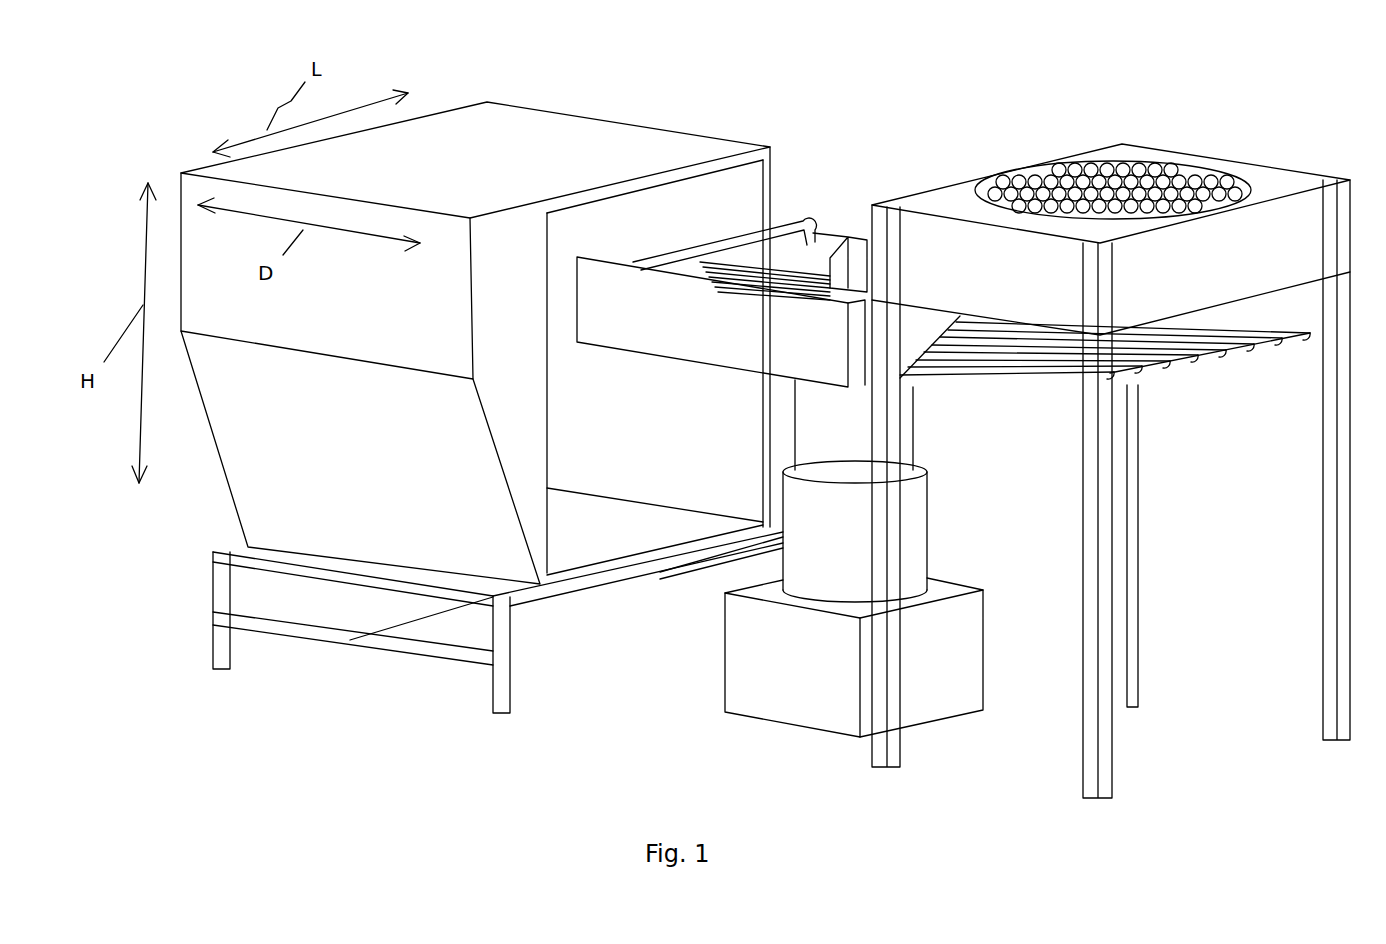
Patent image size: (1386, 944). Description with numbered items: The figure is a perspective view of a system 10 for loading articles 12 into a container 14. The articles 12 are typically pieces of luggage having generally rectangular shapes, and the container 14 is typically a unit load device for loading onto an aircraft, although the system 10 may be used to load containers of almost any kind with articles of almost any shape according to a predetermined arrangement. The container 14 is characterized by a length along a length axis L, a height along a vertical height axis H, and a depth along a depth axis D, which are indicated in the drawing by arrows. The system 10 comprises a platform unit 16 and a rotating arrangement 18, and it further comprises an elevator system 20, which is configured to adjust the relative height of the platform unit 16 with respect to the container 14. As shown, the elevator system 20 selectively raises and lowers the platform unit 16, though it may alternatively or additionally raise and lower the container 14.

The system 10 is at (1250, 72).
The articles 12 is at (848, 272).
The container 14 is at (593, 142).
The platform unit 16 is at (767, 340).
The rotating arrangement 18 is at (1260, 163).
The elevator system 20 is at (747, 655).